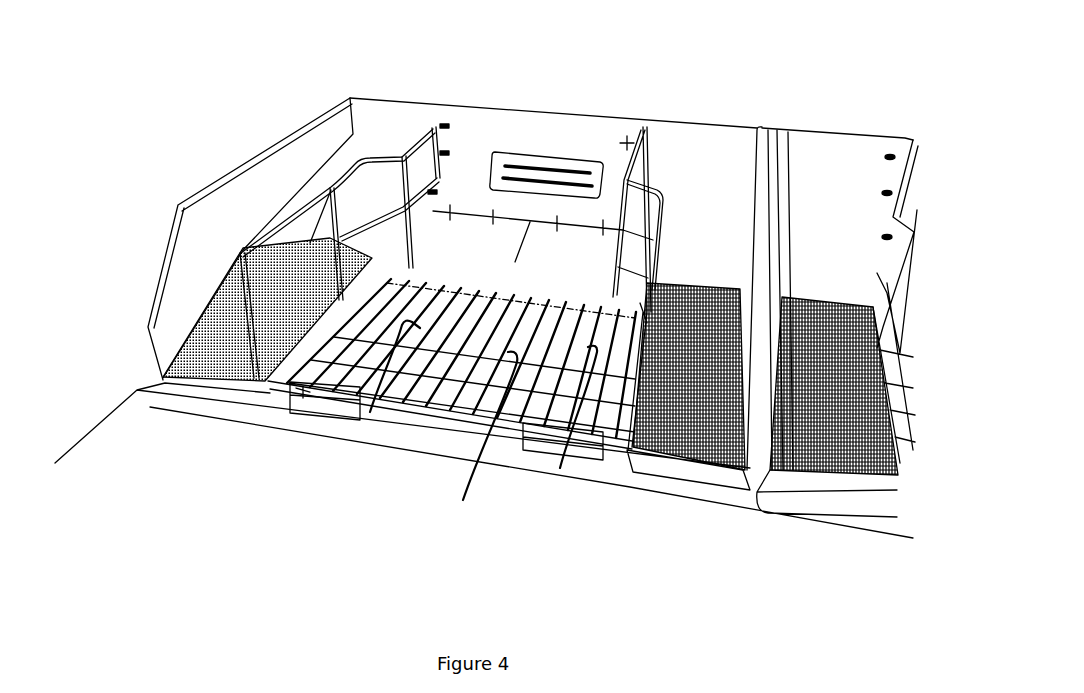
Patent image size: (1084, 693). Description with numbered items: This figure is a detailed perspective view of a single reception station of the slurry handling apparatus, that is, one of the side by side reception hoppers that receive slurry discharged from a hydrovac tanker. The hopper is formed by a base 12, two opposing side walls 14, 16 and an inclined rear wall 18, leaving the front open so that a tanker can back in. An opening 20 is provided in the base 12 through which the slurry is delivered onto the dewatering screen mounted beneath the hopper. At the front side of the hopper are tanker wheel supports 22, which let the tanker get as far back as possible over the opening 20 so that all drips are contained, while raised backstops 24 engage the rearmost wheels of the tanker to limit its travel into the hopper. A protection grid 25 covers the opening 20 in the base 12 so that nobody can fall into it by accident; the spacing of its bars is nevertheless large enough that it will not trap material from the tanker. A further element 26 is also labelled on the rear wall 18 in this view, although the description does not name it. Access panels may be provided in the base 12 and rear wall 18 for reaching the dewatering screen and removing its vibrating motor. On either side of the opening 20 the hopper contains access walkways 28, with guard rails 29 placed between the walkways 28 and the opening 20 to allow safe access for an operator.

The base 12 is at (566, 400).
The side wall 14 is at (258, 178).
The side wall 16 is at (757, 207).
The inclined rear wall 18 is at (545, 130).
The opening 20 is at (352, 380).
The tanker wheel support 22 is at (310, 410).
The raised backstop 24 is at (307, 392).
The protection grid 25 is at (513, 417).
The tie-down bar 26 is at (458, 240).
The access walkway 28 is at (698, 458).
The guard rail 29 is at (373, 157).